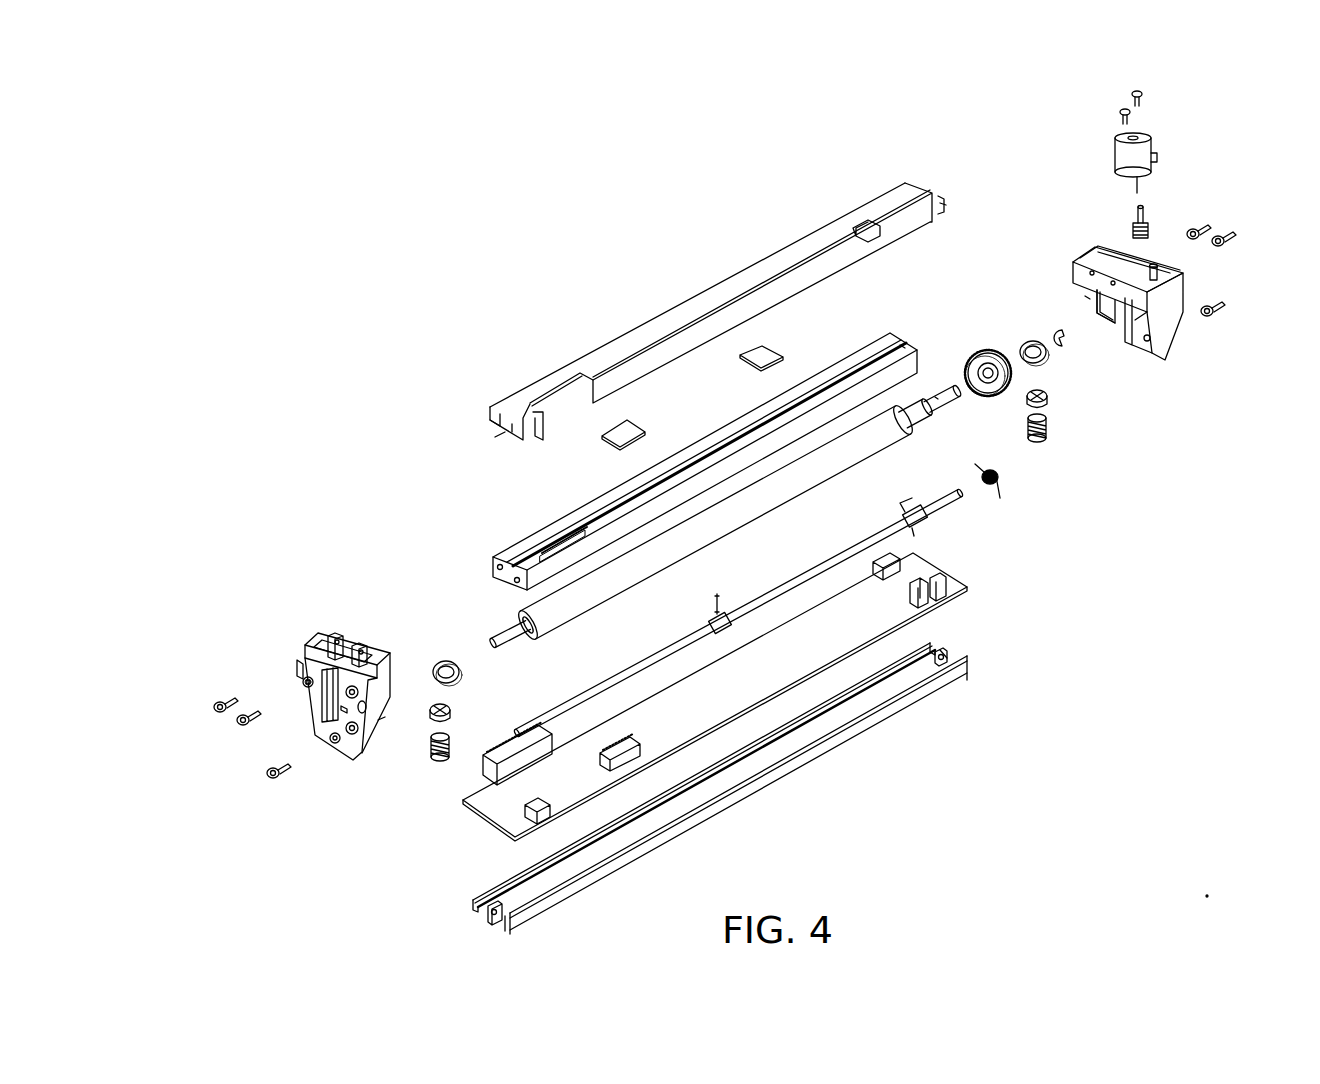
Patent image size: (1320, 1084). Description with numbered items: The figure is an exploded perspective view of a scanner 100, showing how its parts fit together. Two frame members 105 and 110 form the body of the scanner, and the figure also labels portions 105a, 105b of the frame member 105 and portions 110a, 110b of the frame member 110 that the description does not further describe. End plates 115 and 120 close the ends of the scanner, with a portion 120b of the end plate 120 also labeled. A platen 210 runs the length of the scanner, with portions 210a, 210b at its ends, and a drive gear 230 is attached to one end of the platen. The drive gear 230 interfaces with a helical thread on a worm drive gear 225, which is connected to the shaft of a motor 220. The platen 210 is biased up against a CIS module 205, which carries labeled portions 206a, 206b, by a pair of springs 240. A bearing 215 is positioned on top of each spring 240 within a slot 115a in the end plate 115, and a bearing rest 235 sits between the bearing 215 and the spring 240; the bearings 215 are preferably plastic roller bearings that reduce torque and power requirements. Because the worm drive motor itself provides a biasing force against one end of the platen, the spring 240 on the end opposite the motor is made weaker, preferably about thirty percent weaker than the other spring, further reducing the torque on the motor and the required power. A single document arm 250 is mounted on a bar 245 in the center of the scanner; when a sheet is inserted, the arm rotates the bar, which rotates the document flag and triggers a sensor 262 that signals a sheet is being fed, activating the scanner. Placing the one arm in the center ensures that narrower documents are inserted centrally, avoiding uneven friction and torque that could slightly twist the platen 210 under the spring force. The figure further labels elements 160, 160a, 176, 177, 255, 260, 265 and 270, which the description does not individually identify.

The scanner 100 is at (1068, 841).
The frame member 105 is at (848, 212).
The cover left end portion 105a is at (499, 400).
The cover right end portion 105b is at (902, 192).
The frame member 110 is at (915, 704).
The base left end 110a is at (523, 897).
The base right end 110b is at (930, 673).
The end plate 115 is at (352, 768).
The slot 115a is at (300, 665).
The end plate 120 is at (1185, 335).
The bracket tab 120b is at (1107, 322).
The screws 160 is at (268, 777).
The screw holes 160a is at (962, 186).
The bracket hole 176 is at (336, 697).
The bracket slot 177 is at (298, 683).
The CIS module 205 is at (528, 543).
The module mounting hole 206a is at (1077, 280).
The module mounting hole 206b is at (1085, 294).
The platen 210 is at (520, 612).
The roller shaft left end 210a is at (510, 648).
The roller shaft right end 210b is at (950, 402).
The bearing 215 is at (460, 676).
The motor 220 is at (1153, 147).
The worm drive gear 225 is at (1145, 222).
The drive gear 230 is at (995, 352).
The bearing rest 235 is at (455, 714).
The spring 240 is at (432, 760).
The bar 245 is at (660, 665).
The document arm 250 is at (730, 614).
The collar 255 is at (945, 516).
The circuit board 260 is at (962, 580).
The sensor 262 is at (948, 606).
The pads 265 is at (752, 358).
The torsion spring 270 is at (1005, 482).